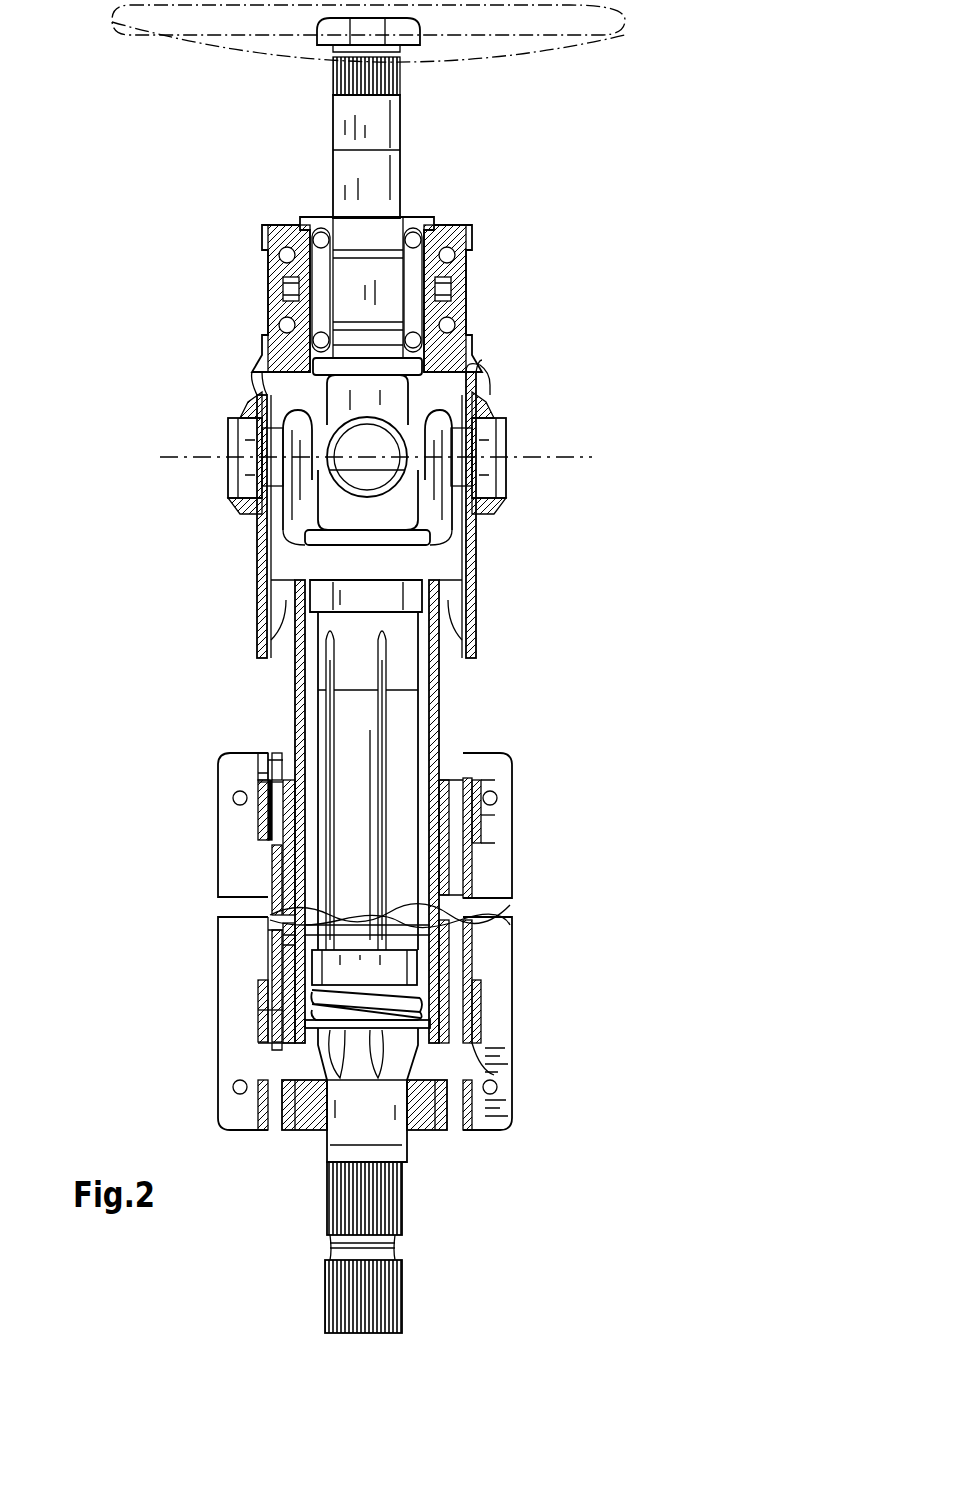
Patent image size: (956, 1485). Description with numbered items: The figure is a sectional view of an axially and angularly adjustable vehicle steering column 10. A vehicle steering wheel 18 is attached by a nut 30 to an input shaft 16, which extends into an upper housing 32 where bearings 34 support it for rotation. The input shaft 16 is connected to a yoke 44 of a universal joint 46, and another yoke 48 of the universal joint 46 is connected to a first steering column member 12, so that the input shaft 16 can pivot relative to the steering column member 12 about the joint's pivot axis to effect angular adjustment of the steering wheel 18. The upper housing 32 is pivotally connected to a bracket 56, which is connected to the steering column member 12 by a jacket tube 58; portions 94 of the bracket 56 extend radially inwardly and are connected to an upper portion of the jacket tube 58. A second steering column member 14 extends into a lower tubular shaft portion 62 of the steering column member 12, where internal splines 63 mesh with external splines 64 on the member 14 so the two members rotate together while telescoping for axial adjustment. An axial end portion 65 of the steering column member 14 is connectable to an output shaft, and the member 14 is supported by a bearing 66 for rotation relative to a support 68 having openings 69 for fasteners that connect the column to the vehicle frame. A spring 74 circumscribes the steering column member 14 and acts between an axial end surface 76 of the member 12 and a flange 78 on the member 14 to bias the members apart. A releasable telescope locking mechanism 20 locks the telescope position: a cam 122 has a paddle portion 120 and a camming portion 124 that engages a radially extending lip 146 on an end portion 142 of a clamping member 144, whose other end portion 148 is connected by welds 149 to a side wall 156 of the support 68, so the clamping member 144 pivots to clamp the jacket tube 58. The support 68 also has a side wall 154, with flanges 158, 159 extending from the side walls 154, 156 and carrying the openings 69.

The vehicle steering column 10 is at (568, 136).
The steering column member 12 is at (360, 682).
The steering column member 14 is at (330, 1062).
The input shaft 16 is at (372, 157).
The vehicle steering wheel 18 is at (622, 3).
The releasable telescope locking mechanism 20 is at (235, 878).
The nut 30 is at (410, 35).
The upper housing 32 is at (455, 355).
The bearings 34 is at (318, 236).
The yoke 44 is at (335, 400).
The universal joint 46 is at (355, 438).
The yoke 48 is at (300, 525).
The bracket 56 is at (476, 595).
The jacket tube 58 is at (439, 735).
The lower tubular shaft portion 62 is at (290, 942).
The internal splines 63 is at (496, 818).
The external splines 64 is at (420, 978).
The axial end portion 65 is at (387, 1245).
The bearing 66 is at (415, 1140).
The support 68 is at (240, 760).
The openings 69 is at (234, 803).
The spring 74 is at (262, 1008).
The axial end surface 76 is at (440, 1000).
The flange 78 is at (470, 1018).
The portions 94 is at (286, 642).
The paddle portion 120 is at (270, 905).
The cam 122 is at (268, 760).
The camming portion 124 is at (262, 1022).
The end portion 142 is at (262, 850).
The clamping member 144 is at (268, 935).
The radially extending lip 146 is at (256, 870).
The end portion 148 is at (482, 832).
The welds 149 is at (478, 780).
The side wall 154 is at (257, 785).
The side wall 156 is at (470, 878).
The flange 158 is at (262, 785).
The flange 159 is at (496, 817).